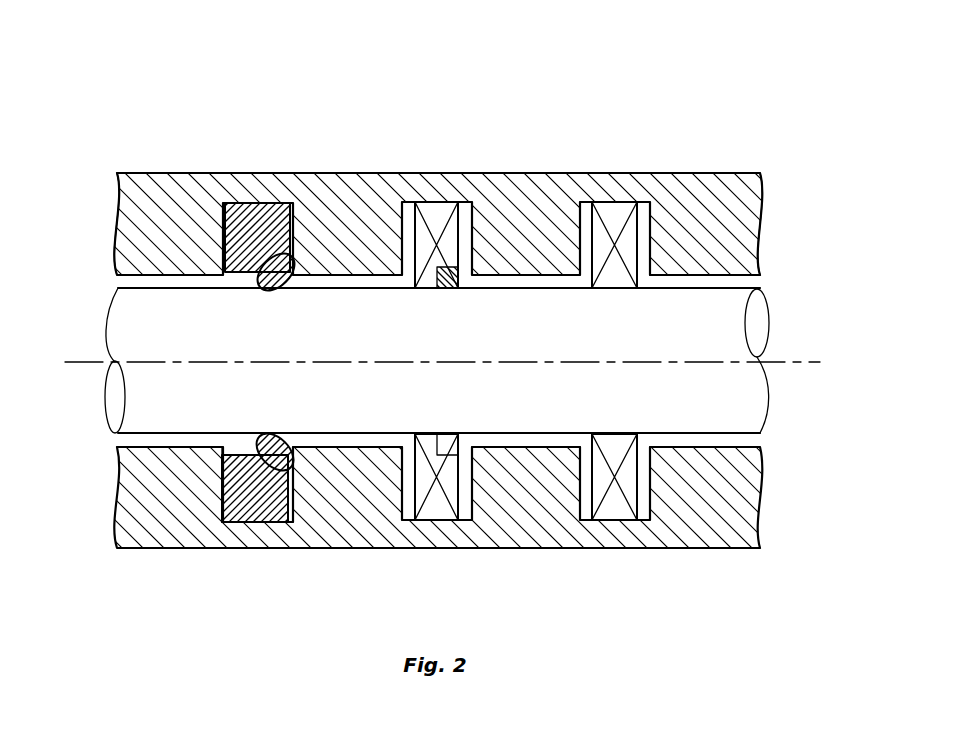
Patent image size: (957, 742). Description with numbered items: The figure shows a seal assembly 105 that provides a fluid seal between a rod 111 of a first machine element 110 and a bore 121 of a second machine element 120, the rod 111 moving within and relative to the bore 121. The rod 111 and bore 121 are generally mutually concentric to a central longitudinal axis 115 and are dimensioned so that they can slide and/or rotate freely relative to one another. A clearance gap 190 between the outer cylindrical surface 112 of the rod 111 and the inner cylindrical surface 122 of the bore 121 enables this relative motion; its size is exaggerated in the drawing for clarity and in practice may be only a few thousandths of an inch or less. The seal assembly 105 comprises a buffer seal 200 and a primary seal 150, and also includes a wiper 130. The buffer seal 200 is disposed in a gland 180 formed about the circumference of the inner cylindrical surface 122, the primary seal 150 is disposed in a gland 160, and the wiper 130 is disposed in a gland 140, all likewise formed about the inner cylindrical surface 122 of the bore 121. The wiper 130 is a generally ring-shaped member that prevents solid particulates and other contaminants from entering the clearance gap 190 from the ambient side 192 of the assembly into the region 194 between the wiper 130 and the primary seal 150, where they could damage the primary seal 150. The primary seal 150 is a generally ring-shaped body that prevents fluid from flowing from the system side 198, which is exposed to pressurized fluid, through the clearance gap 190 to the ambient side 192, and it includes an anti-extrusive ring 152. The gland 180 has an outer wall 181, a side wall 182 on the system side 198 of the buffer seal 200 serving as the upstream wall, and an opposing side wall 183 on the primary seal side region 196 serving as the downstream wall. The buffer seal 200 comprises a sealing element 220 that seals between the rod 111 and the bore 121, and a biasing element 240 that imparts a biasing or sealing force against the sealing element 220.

The seal assembly 105 is at (137, 141).
The first machine element 110 is at (770, 408).
The rod 111 is at (718, 338).
The outer cylindrical surface 112 is at (737, 436).
The central longitudinal axis 115 is at (80, 362).
The second machine element 120 is at (745, 173).
The bore 121 is at (712, 273).
The inner cylindrical surface 122 is at (748, 278).
The wiper 130 is at (620, 210).
The gland 140 is at (590, 215).
The primary seal 150 is at (437, 210).
The anti-extrusive ring 152 is at (447, 292).
The gland 160 is at (408, 213).
The gland 180 is at (222, 222).
The outer wall 181 is at (264, 522).
The side wall 182 is at (223, 505).
The opposing side wall 183 is at (294, 495).
The clearance gap 190 is at (125, 281).
The ambient side 192 is at (685, 447).
The region 194 is at (517, 447).
The primary seal side region 196 is at (345, 447).
The system side 198 is at (173, 447).
The buffer seal 200 is at (262, 213).
The sealing element 220 is at (270, 292).
The biasing element 240 is at (272, 215).